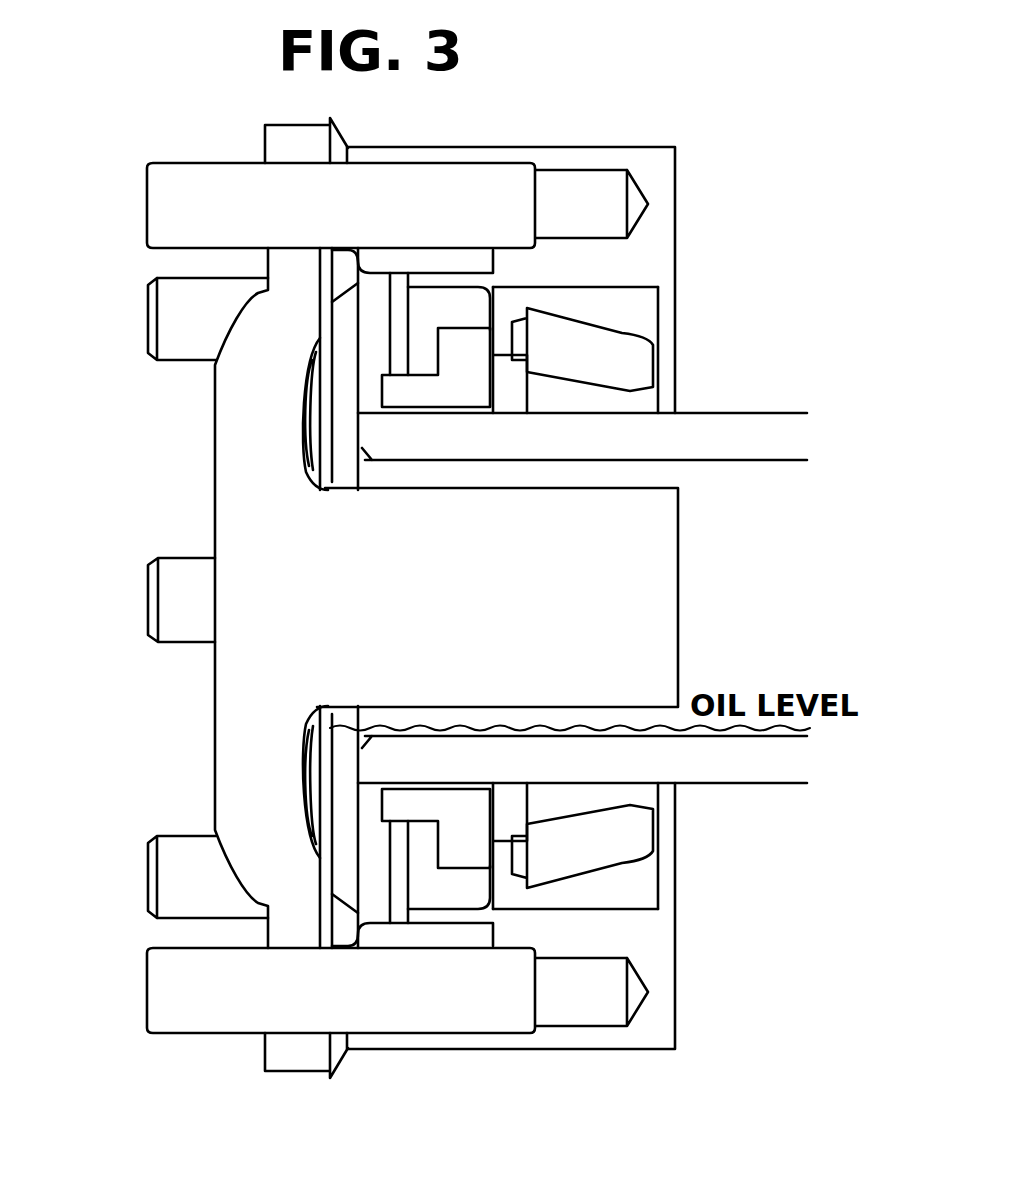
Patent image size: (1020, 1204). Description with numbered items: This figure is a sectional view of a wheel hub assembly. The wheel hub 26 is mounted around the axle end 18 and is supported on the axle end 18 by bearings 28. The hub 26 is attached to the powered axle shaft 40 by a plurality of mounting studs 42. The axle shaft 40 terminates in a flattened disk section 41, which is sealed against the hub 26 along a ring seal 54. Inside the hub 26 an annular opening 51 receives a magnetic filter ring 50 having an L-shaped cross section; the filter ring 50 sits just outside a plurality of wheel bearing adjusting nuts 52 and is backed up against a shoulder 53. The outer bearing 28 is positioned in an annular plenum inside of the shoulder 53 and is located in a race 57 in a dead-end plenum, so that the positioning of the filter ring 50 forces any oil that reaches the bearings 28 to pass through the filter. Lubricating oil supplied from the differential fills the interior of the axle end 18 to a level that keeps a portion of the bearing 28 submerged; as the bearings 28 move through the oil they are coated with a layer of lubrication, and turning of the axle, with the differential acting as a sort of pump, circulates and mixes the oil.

The axle end 18 is at (770, 425).
The wheel hub 26 is at (648, 160).
The bearings 28 is at (645, 355).
The powered axle shaft 40 is at (232, 697).
The flattened disk section 41 is at (298, 1060).
The mounting studs 42 is at (165, 177).
The magnetic filter ring 50 is at (495, 295).
The annular opening 51 is at (423, 912).
The wheel bearing adjusting nuts 52 is at (468, 393).
The shoulder 53 is at (480, 920).
The ring seal 54 is at (328, 293).
The race 57 is at (625, 898).